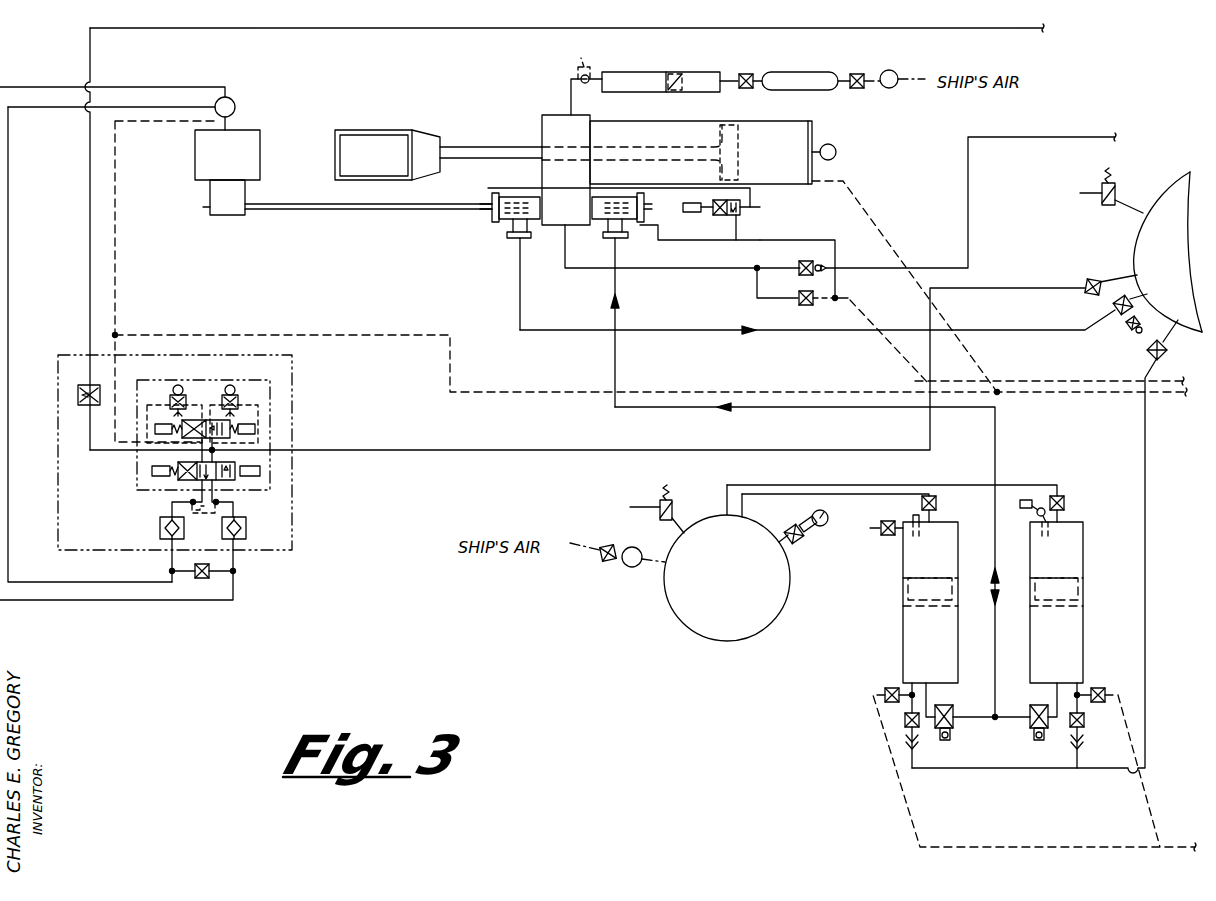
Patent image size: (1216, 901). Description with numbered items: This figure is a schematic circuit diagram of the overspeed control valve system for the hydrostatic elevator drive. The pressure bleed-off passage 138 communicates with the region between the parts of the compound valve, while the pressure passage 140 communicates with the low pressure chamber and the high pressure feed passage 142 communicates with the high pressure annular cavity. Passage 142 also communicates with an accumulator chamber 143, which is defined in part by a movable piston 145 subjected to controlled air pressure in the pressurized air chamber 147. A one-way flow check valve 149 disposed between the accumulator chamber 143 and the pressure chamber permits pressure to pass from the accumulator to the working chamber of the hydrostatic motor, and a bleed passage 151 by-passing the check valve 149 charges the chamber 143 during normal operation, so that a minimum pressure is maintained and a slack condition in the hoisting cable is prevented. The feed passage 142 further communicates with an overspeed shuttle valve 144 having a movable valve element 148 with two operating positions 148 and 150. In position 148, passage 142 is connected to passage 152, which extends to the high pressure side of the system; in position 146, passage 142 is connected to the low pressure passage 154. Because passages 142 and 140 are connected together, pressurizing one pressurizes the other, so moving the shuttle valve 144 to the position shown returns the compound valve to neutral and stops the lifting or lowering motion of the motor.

The pressure bleed-off passage 138 is at (568, 97).
The pressure passage 140 is at (612, 188).
The high pressure feed passage 142 is at (645, 192).
The accumulator chamber 143 is at (640, 78).
The overspeed shuttle valve 144 is at (737, 196).
The movable piston 145 is at (677, 73).
The valve position 146 is at (724, 216).
The pressurized air chamber 147 is at (714, 90).
The movable valve element 148 is at (742, 207).
The one-way flow check valve 149 is at (587, 58).
The bleed passage 151 is at (590, 74).
The valve position 150 is at (734, 196).
The high pressure passage 152 is at (658, 243).
The low pressure passage 154 is at (788, 240).